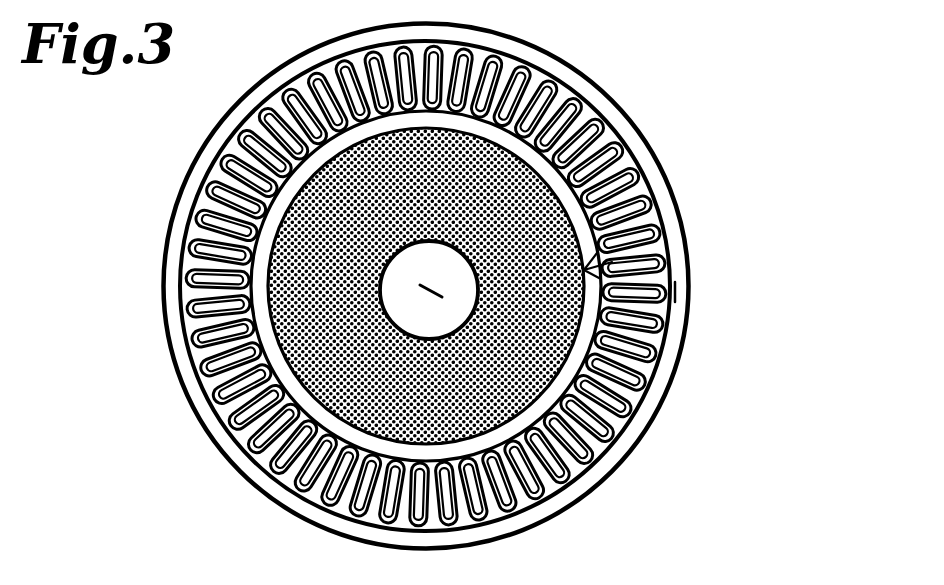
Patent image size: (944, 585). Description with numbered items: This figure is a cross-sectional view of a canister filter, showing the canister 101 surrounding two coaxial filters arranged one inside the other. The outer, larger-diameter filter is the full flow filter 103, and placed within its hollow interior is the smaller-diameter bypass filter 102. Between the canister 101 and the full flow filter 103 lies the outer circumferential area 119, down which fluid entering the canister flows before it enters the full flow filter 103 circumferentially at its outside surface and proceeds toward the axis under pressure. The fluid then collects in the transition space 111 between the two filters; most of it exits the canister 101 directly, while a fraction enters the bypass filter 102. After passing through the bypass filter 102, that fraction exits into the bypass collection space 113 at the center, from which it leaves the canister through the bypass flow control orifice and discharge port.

The canister 101 is at (692, 472).
The bypass filter 102 is at (518, 322).
The full flow filter 103 is at (620, 133).
The transition space 111 is at (660, 206).
The bypass collection space 113 is at (432, 290).
The outer circumferential area 119 is at (686, 291).